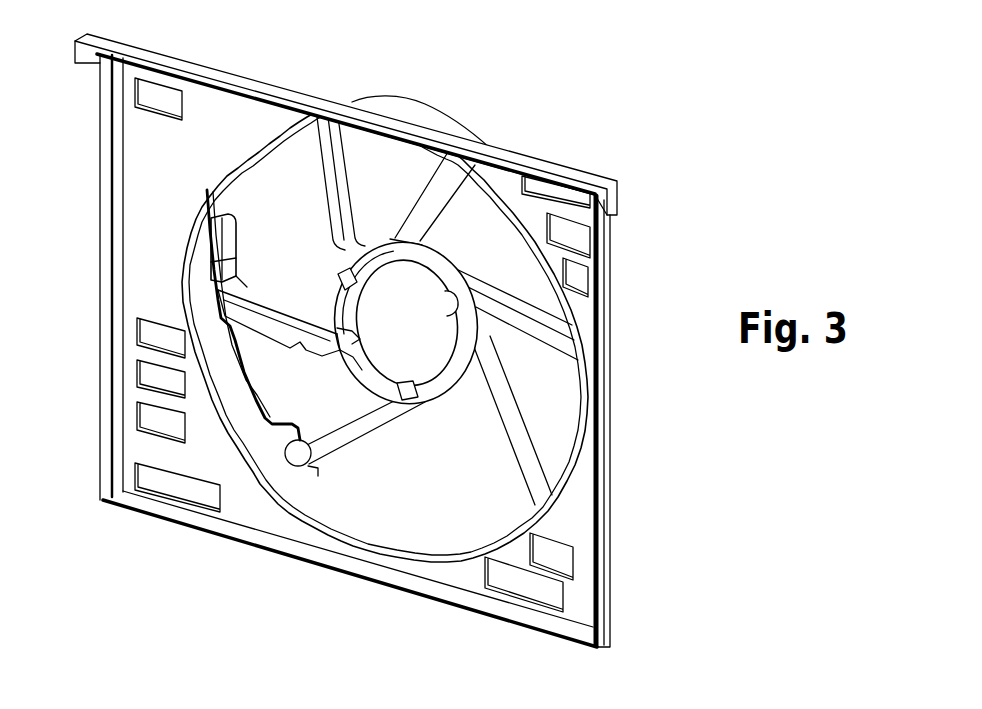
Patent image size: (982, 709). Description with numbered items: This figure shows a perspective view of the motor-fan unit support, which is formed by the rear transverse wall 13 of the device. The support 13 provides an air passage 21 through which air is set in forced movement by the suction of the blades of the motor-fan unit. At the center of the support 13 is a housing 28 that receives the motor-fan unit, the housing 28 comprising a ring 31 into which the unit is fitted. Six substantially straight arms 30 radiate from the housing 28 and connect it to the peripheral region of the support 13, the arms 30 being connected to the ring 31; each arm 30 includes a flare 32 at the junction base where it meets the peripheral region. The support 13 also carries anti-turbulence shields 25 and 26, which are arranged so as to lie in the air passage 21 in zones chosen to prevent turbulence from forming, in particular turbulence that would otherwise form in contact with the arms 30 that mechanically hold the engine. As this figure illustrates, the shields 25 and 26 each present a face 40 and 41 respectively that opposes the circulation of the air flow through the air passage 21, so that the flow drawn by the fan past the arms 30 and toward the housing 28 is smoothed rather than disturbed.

The rear transverse wall 13 is at (483, 118).
The air passage 21 is at (280, 168).
The anti-turbulence shield 25 is at (257, 233).
The anti-turbulence shield 26 is at (262, 375).
The housing 28 is at (423, 333).
The arms 30 is at (367, 432).
The ring 31 is at (373, 238).
The flare 32 is at (296, 442).
The face 40 is at (213, 262).
The face 41 is at (253, 407).